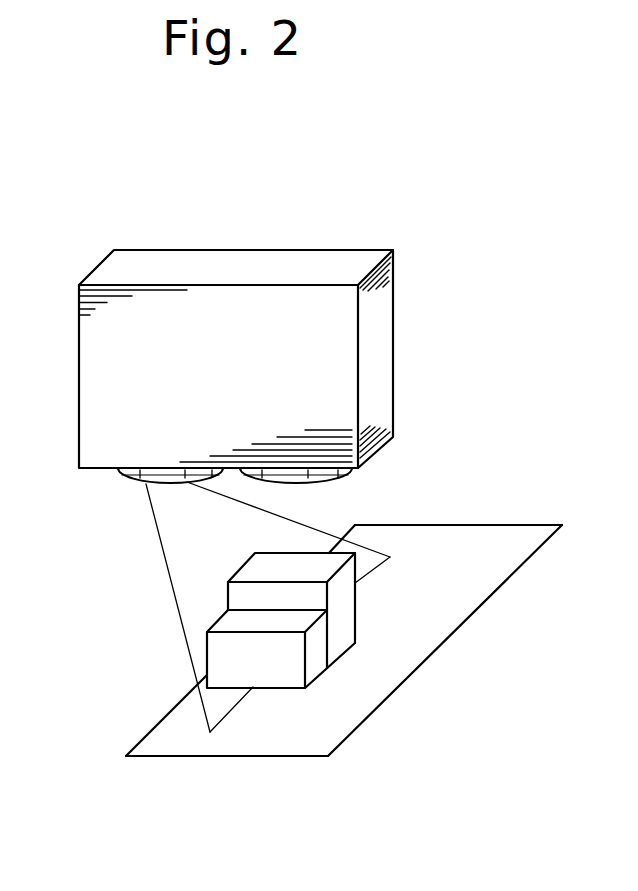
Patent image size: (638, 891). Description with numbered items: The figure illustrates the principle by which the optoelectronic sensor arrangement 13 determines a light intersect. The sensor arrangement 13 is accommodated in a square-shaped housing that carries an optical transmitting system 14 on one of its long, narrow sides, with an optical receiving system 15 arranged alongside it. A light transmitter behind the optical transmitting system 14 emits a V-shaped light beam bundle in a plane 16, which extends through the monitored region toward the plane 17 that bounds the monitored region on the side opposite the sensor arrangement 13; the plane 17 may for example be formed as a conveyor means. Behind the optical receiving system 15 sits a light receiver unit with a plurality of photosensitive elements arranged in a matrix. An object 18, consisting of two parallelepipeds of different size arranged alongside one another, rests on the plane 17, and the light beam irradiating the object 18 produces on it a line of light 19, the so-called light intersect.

The optoelectronic sensor arrangement 13 is at (305, 249).
The optical transmitting system 14 is at (131, 487).
The optical receiving system 15 is at (313, 484).
The plane 16 is at (173, 588).
The plane 17 is at (178, 738).
The object 18 is at (333, 660).
The line of light 19 is at (253, 600).